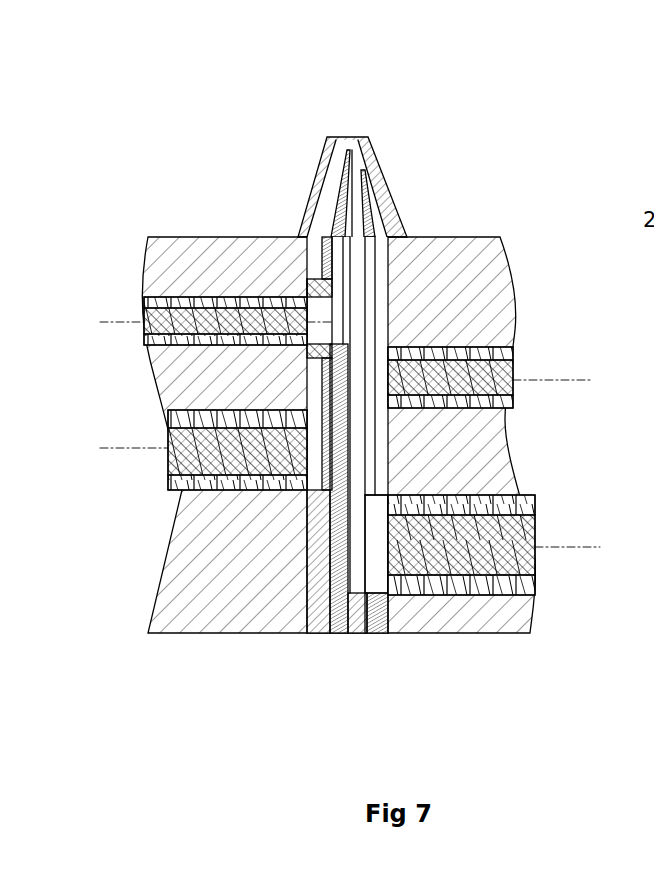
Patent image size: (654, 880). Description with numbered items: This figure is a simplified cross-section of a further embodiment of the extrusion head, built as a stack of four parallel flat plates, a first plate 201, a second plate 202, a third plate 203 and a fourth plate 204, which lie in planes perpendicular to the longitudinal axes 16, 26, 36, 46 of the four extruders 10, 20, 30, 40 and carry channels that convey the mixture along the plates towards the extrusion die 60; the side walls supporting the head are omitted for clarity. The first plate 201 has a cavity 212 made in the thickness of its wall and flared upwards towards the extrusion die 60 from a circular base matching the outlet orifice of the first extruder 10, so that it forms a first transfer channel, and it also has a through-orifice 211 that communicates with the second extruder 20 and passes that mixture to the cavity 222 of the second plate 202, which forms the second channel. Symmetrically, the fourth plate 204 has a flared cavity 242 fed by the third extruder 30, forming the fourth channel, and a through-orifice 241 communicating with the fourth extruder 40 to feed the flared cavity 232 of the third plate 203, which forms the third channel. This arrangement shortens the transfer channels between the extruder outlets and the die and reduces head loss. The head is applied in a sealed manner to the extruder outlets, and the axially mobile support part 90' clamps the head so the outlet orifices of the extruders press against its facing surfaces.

The extrusion die 60 is at (323, 152).
The cavity 212 is at (312, 285).
The through-orifice 211 is at (317, 318).
The cavity 222 is at (338, 272).
The cavity 232 is at (358, 322).
The cavity 242 is at (380, 335).
The second extruder 20 is at (130, 300).
The longitudinal axis 26 is at (100, 327).
The longitudinal axis 16 is at (115, 447).
The first extruder 10 is at (170, 470).
The third extruder 30 is at (528, 357).
The longitudinal axis 36 is at (583, 380).
The fourth extruder 40 is at (545, 522).
The longitudinal axis 46 is at (600, 547).
The axially mobile support part 90' is at (349, 482).
The first plate 201 is at (322, 625).
The second plate 202 is at (340, 633).
The third plate 203 is at (358, 633).
The fourth plate 204 is at (378, 633).
The through-orifice 241 is at (377, 572).